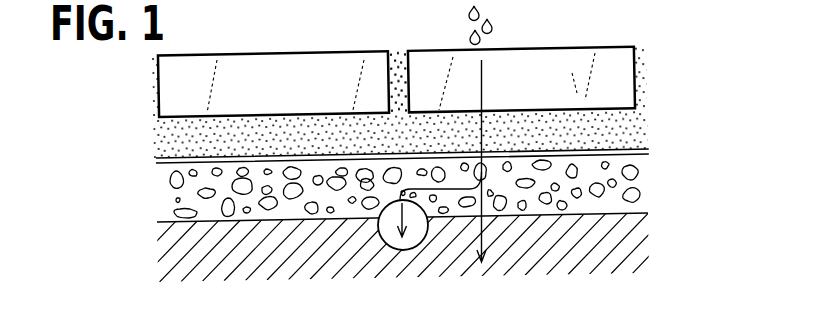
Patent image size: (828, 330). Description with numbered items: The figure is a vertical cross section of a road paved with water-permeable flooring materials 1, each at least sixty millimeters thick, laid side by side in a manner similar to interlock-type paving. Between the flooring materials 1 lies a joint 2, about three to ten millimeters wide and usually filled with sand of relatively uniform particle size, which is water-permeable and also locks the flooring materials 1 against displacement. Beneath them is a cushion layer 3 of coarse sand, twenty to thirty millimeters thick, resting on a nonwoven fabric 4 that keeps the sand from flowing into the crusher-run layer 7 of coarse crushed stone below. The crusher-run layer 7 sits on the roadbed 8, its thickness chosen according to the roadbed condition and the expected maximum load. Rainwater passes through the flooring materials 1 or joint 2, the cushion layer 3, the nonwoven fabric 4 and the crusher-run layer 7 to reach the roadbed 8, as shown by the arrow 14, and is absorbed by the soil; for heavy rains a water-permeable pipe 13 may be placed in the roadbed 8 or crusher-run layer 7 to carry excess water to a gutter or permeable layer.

The water-permeable flooring materials 1 is at (278, 55).
The joint 2 is at (403, 62).
The cushion layer 3 is at (635, 127).
The nonwoven fabric 4 is at (636, 148).
The crusher-run layer 7 is at (634, 182).
The roadbed 8 is at (637, 240).
The water-permeable pipe 13 is at (393, 248).
The arrow 14 is at (468, 32).